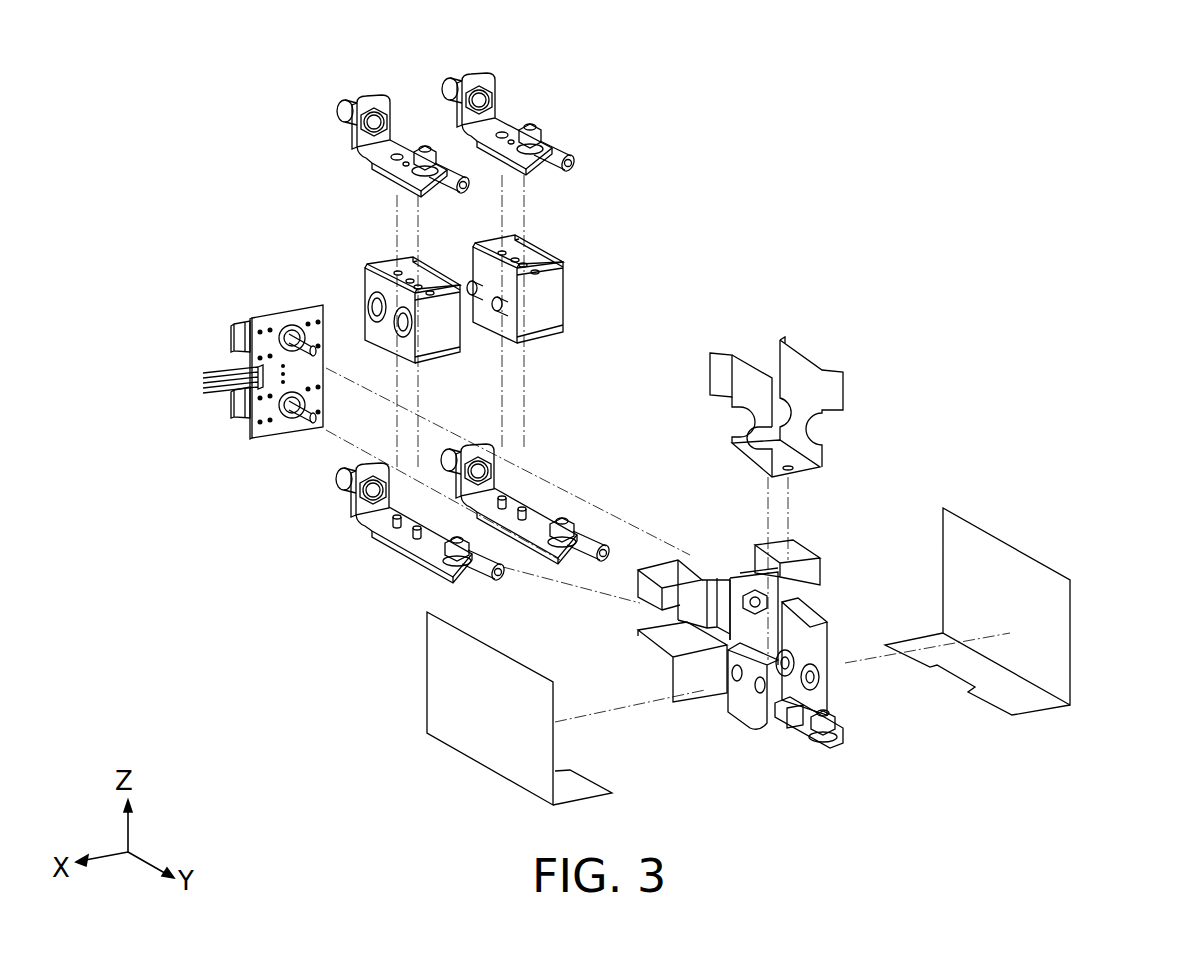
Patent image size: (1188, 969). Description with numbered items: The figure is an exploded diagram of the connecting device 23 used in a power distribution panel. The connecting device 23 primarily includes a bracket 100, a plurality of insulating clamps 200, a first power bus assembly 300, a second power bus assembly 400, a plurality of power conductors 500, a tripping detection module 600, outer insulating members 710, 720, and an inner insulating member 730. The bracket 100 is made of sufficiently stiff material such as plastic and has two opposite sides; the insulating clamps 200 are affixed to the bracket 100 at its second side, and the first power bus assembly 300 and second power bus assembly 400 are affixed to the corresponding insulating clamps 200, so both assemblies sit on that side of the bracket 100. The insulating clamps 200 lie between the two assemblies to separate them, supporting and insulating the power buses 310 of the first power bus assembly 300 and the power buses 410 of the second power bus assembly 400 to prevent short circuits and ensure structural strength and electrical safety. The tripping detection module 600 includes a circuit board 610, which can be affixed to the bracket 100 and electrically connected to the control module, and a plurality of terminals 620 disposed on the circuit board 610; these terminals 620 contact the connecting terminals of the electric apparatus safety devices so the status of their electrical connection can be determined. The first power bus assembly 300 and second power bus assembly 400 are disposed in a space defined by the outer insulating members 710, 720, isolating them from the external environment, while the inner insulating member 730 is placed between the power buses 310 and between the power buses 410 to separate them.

The connecting device 23 is at (193, 61).
The bracket 100 is at (748, 698).
The insulating clamps 200 is at (383, 287).
The first power bus assembly 300 is at (543, 115).
The power buses 310 is at (487, 83).
The second power bus assembly 400 is at (585, 522).
The power buses 410 is at (538, 520).
The power conductors 500 is at (568, 166).
The tripping detection module 600 is at (292, 442).
The circuit board 610 is at (277, 320).
The terminals 620 is at (236, 333).
The outer insulating member 710 is at (460, 670).
The outer insulating member 720 is at (1038, 620).
The inner insulating member 730 is at (835, 392).